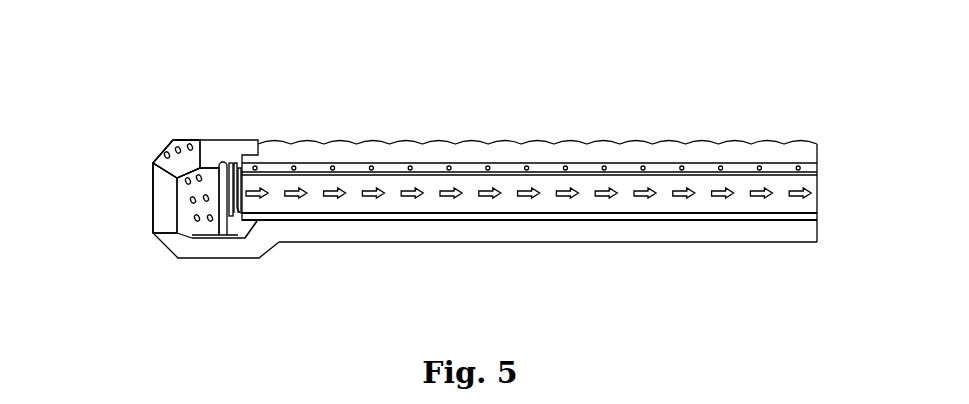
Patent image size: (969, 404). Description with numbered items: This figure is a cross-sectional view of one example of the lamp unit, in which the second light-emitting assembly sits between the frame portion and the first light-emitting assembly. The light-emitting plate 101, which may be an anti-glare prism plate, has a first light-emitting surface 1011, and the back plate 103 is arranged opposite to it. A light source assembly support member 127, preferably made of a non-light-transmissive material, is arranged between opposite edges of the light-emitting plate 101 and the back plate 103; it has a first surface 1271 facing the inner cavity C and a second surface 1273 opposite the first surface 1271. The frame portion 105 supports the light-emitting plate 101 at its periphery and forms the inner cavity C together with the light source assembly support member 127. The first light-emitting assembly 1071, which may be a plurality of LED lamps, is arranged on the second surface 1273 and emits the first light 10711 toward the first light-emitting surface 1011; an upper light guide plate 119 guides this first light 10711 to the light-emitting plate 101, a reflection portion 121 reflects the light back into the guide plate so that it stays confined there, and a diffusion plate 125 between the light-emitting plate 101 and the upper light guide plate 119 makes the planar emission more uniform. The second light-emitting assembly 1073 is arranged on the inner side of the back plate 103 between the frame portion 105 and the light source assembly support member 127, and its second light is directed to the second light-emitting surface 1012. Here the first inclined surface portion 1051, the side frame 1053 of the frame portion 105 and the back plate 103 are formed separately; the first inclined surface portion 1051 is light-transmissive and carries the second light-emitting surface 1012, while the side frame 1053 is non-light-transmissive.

The light-emitting plate 101 is at (807, 153).
The first light-emitting surface 1011 is at (522, 141).
The second light-emitting surface 1012 is at (172, 145).
The back plate 103 is at (552, 232).
The frame portion 105 is at (73, 153).
The first inclined surface portion 1051 is at (165, 150).
The side frame 1053 is at (160, 204).
The first light-emitting assembly 1071 is at (240, 216).
The first light 10711 is at (817, 192).
The second light-emitting assembly 1073 is at (203, 238).
The upper light guide plate 119 is at (815, 200).
The reflection portion 121 is at (817, 218).
The diffusion plate 125 is at (817, 165).
The light source assembly support member 127 is at (224, 162).
The first surface 1271 is at (218, 166).
The second surface 1273 is at (237, 163).
The inner cavity C is at (180, 218).